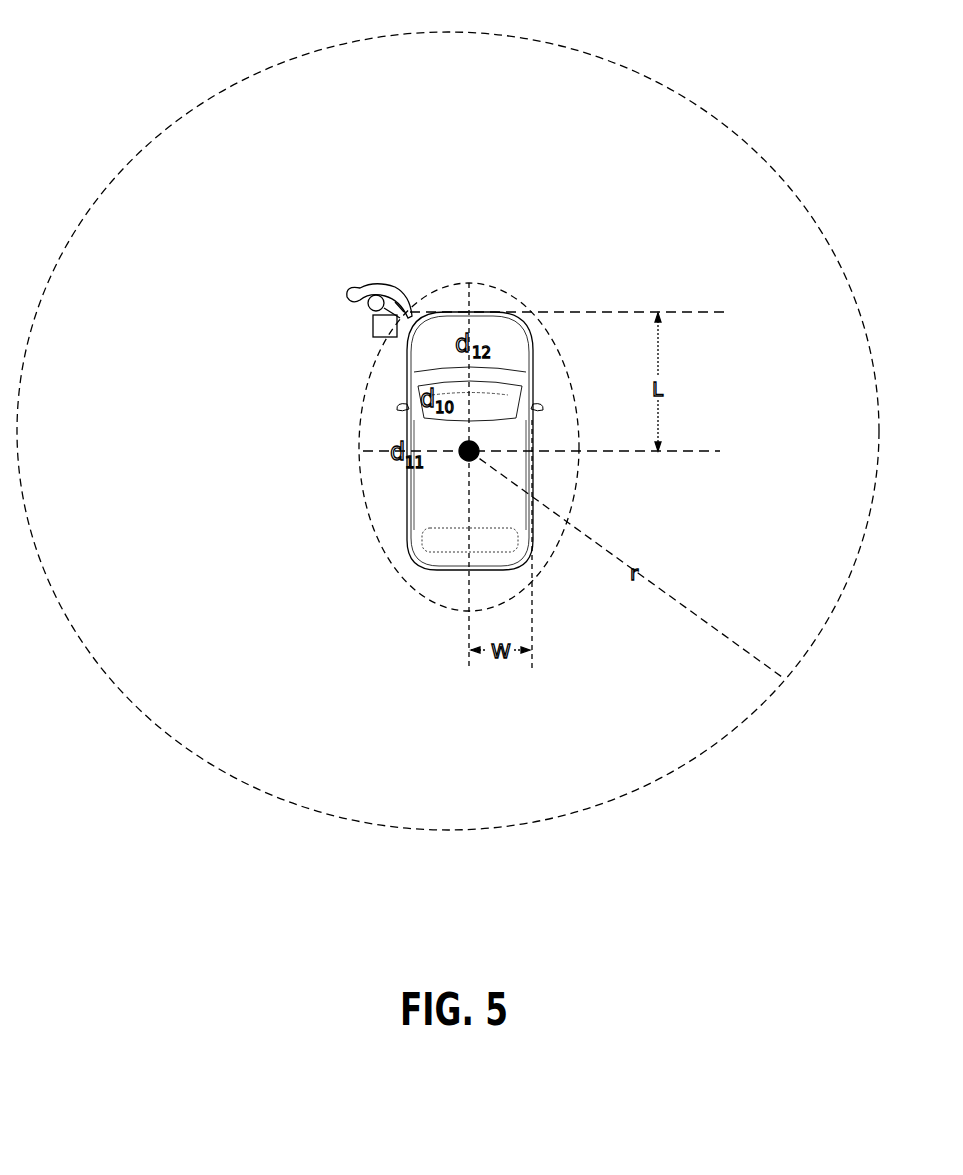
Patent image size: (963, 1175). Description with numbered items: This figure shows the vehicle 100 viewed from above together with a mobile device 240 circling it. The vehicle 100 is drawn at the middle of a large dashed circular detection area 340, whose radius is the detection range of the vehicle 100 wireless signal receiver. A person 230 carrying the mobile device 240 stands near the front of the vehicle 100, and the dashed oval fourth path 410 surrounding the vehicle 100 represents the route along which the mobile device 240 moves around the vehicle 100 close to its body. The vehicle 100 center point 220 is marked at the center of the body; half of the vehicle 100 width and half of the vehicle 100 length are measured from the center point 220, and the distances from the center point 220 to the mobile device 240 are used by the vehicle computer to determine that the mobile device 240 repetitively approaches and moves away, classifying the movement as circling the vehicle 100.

The detection area 340 is at (258, 71).
The fourth path 410 is at (366, 398).
The vehicle 100 is at (408, 507).
The center point 220 is at (463, 460).
The person 230 is at (372, 287).
The mobile device 240 is at (372, 327).